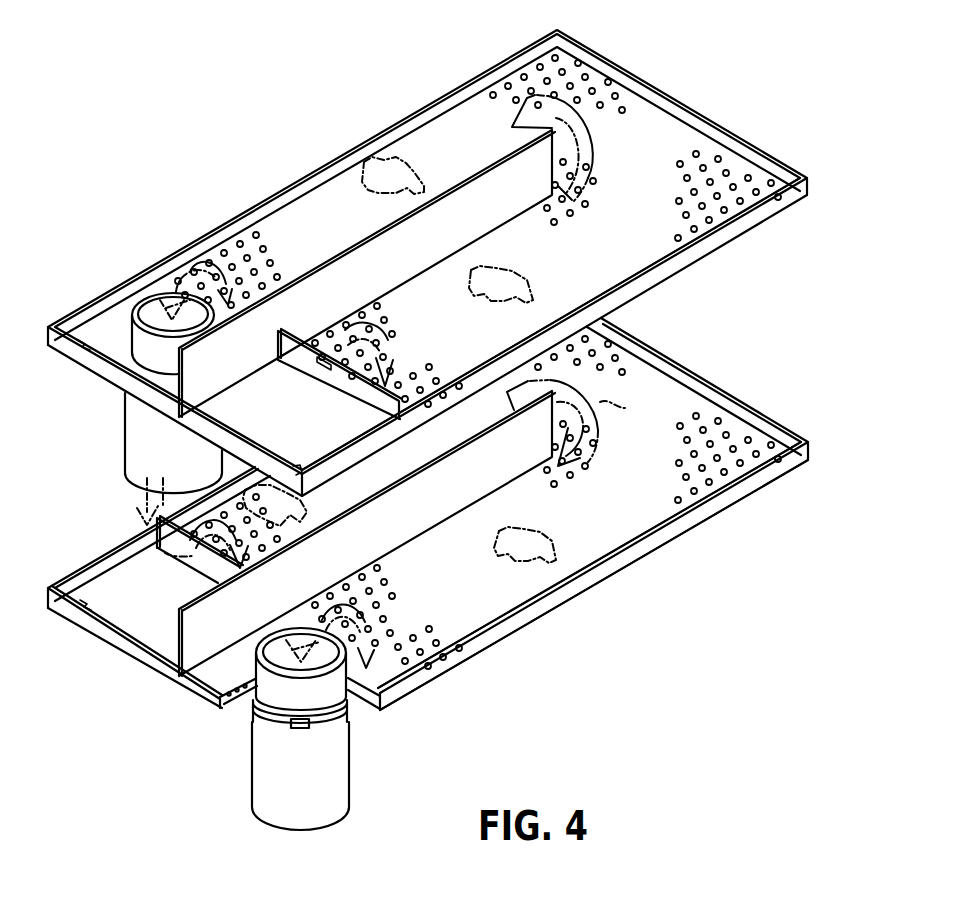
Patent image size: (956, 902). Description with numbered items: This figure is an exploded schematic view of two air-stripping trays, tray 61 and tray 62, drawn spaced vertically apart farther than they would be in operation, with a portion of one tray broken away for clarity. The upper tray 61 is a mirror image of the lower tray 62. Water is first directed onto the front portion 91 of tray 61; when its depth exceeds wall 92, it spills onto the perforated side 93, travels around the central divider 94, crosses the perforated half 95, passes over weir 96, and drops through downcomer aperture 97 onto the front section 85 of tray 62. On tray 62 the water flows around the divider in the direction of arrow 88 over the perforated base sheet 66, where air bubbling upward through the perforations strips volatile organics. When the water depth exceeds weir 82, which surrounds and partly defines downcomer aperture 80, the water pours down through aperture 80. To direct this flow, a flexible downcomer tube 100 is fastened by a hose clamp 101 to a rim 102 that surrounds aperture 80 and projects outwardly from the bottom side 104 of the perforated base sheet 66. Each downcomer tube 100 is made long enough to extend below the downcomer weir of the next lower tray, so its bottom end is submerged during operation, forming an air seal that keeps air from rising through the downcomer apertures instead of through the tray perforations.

The tray 61 is at (728, 131).
The tray 62 is at (746, 402).
The perforated base sheet 66 is at (686, 491).
The downcomer aperture 80 is at (258, 657).
The weir 82 is at (363, 648).
The front portion 85 is at (127, 625).
The arrow 88 is at (607, 411).
The front portion 91 is at (230, 433).
The wall 92 is at (348, 391).
The perforated side 93 is at (622, 275).
The central divider 94 is at (387, 237).
The perforated half 95 is at (339, 188).
The weir 96 is at (115, 317).
The downcomer aperture 97 is at (162, 303).
The flexible downcomer tube 100 is at (343, 788).
The hose clamp 101 is at (342, 715).
The rim 102 is at (238, 702).
The bottom side 104 is at (470, 638).